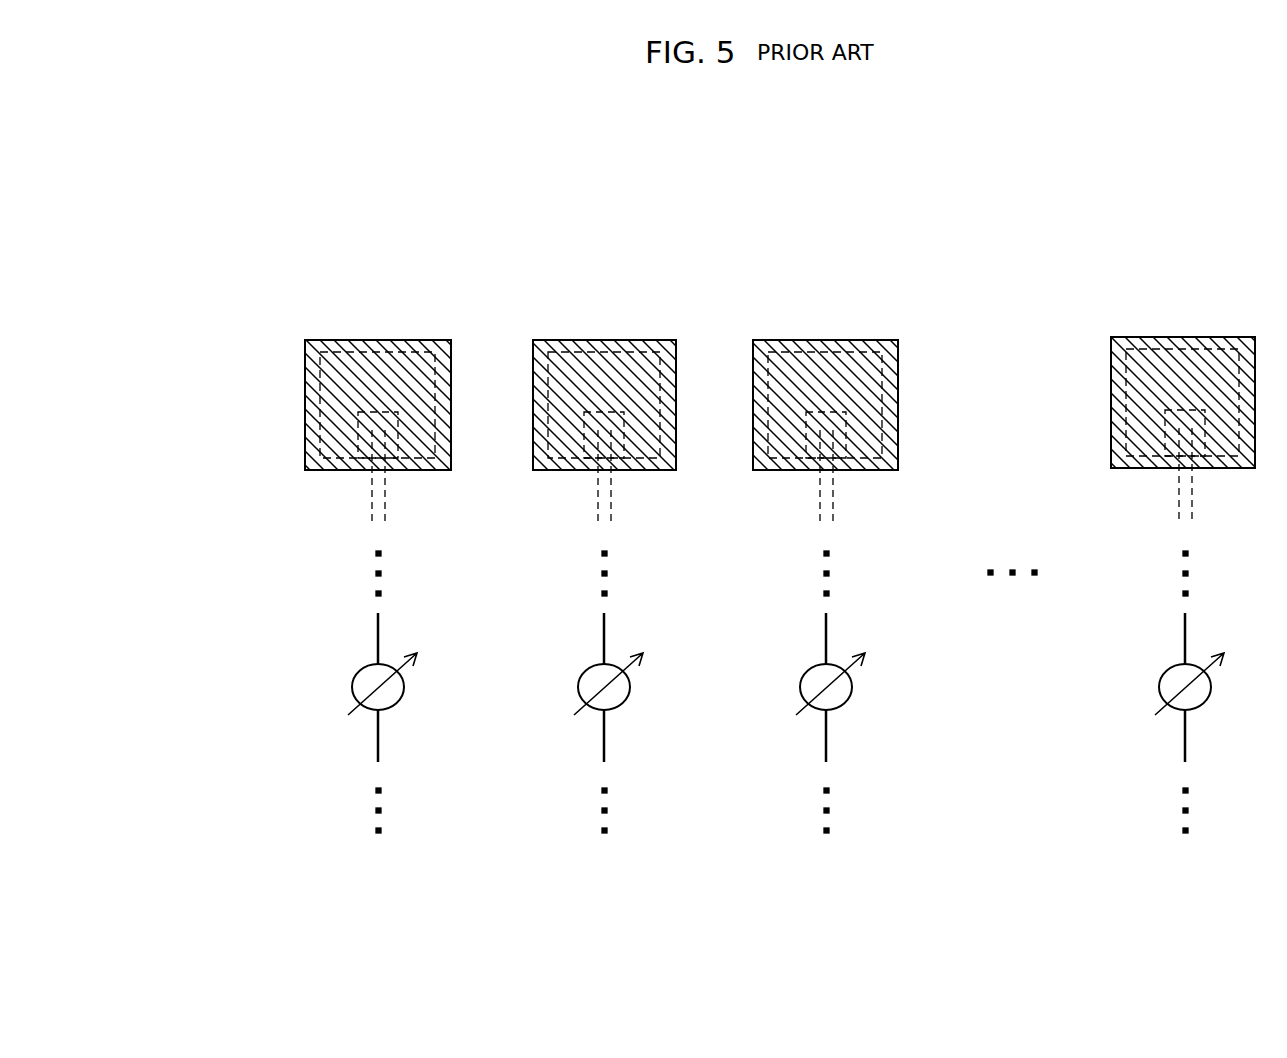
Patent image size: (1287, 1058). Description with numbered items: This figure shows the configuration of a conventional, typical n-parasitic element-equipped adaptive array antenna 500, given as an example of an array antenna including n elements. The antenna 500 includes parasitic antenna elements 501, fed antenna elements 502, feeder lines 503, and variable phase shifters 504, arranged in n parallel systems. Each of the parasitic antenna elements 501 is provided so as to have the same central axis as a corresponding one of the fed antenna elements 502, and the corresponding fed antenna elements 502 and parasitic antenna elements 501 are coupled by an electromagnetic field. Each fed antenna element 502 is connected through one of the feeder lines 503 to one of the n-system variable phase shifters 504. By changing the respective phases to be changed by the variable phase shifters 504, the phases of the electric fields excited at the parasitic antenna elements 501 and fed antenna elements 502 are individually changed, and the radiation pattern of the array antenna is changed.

The n-parasitic element-equipped adaptive array antenna 500 is at (1084, 199).
The parasitic antenna elements 501 is at (1117, 345).
The fed antenna elements 502 is at (1138, 418).
The feeder lines 503 is at (1180, 510).
The variable phase shifters 504 is at (1162, 678).